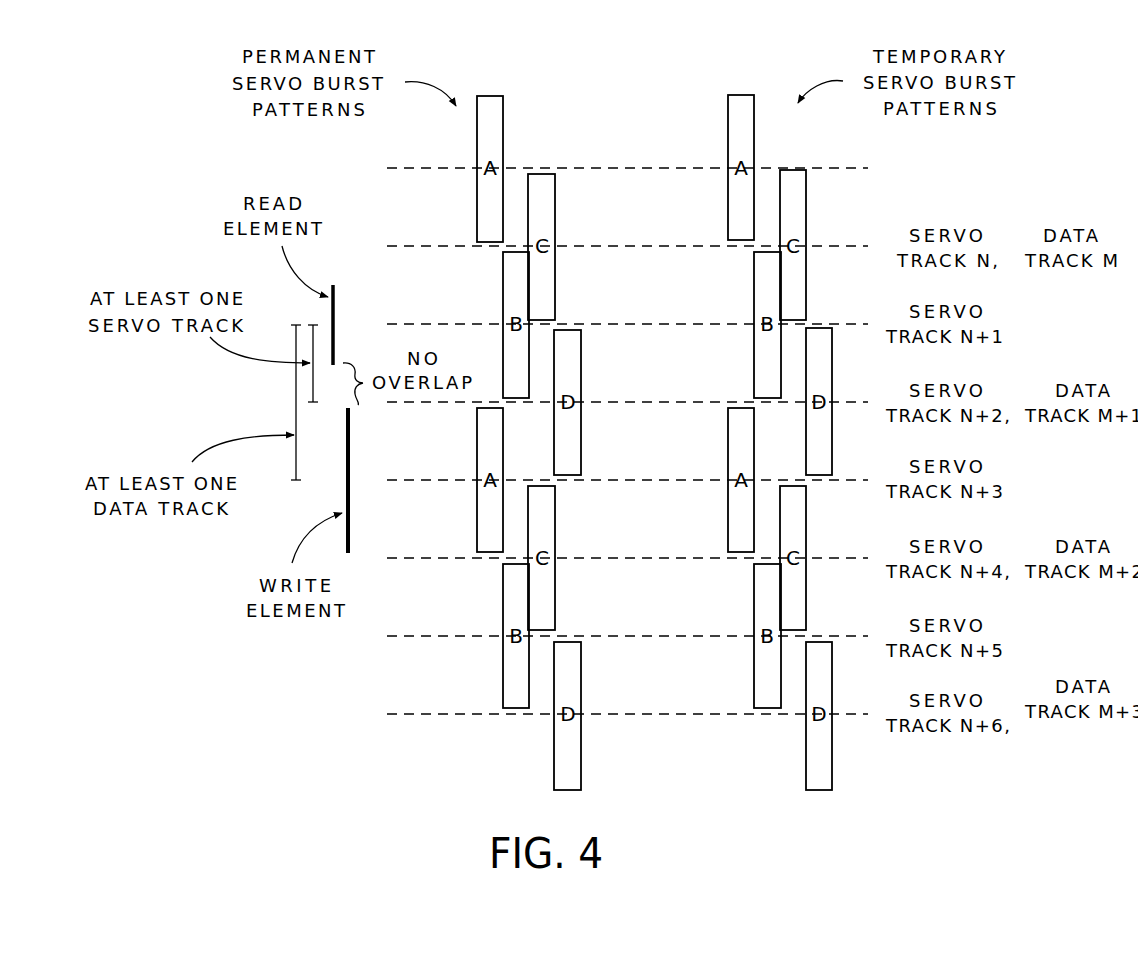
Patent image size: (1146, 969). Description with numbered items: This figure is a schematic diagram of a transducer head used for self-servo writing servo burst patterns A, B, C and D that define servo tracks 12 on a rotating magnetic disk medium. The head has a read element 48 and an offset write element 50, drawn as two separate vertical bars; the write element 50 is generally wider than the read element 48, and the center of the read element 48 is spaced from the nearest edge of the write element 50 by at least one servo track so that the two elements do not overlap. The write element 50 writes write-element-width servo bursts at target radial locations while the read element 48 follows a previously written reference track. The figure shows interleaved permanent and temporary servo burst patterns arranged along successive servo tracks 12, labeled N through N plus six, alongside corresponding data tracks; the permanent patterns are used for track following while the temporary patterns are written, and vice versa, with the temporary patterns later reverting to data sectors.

The servo tracks 12 is at (405, 642).
The read element 48 is at (337, 311).
The write element 50 is at (350, 532).